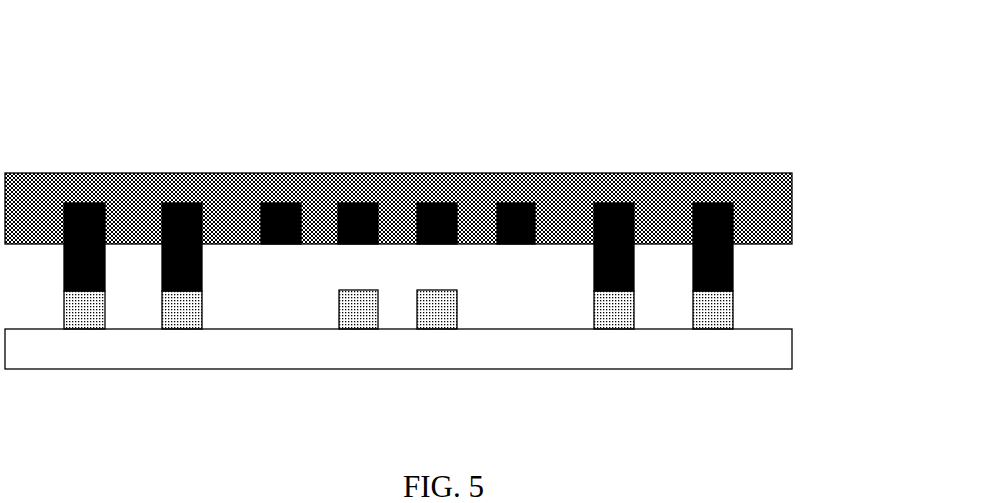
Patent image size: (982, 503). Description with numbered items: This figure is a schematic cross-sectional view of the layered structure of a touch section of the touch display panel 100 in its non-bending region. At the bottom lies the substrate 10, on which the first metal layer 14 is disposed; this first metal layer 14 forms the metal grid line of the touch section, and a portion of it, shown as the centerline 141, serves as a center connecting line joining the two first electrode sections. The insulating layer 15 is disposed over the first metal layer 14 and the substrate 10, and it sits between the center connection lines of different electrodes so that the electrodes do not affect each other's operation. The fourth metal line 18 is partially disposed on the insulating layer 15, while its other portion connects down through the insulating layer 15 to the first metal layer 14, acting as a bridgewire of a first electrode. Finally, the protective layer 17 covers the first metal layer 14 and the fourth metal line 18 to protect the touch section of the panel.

The touch display panel 100 is at (371, 66).
The substrate 10 is at (772, 350).
The first metal layer 14 is at (717, 310).
The centerline portion of first metal layer 141 is at (430, 310).
The insulating layer 15 is at (378, 270).
The protective layer 17 is at (237, 190).
The fourth metal line 18 is at (618, 215).